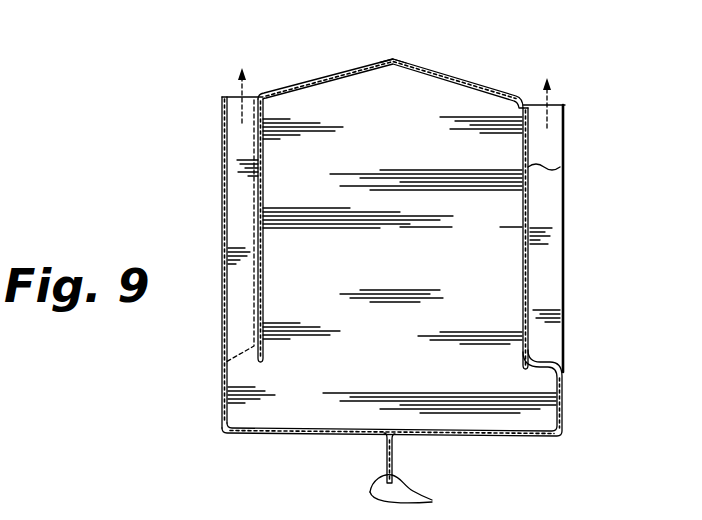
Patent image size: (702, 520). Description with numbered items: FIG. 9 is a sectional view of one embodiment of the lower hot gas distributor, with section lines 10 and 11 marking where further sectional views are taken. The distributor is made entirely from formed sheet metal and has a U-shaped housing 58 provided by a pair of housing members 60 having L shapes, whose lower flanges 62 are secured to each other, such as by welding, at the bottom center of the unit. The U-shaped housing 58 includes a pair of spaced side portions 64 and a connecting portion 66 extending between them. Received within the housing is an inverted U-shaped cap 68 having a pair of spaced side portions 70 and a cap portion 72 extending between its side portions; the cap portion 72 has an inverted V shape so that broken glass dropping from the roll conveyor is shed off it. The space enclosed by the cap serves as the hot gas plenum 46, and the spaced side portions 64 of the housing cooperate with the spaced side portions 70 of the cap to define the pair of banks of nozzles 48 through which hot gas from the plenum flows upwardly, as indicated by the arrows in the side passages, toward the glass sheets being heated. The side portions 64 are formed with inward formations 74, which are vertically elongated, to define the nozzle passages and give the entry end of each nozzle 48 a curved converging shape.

The section line 10- 10 is at (167, 47).
The section line 11- 11 is at (208, 50).
The hot gas plenum 46 is at (498, 227).
The banks of nozzles 48 is at (232, 210).
The U-shaped housing 58 is at (530, 448).
The housing members 60 is at (222, 392).
The lower flanges 62 is at (420, 501).
The side portions 64 is at (222, 168).
The connecting portion 66 is at (360, 436).
The inverted U-shaped cap 68 is at (409, 50).
The side portions 70 is at (263, 248).
The cap portion 72 is at (437, 72).
The inward formations 74 is at (548, 286).